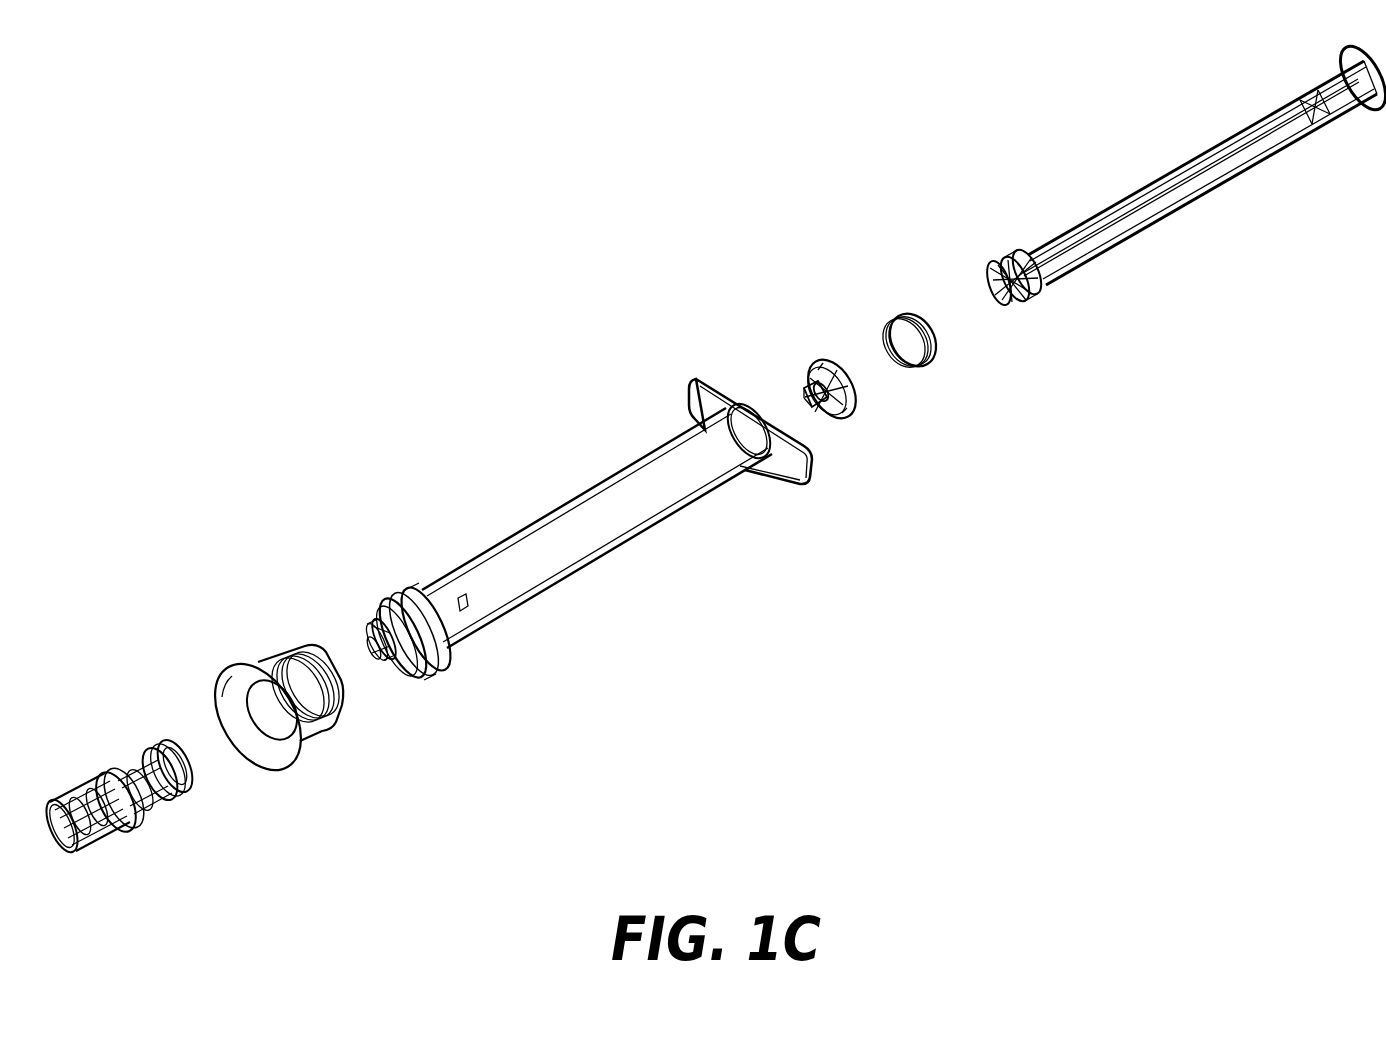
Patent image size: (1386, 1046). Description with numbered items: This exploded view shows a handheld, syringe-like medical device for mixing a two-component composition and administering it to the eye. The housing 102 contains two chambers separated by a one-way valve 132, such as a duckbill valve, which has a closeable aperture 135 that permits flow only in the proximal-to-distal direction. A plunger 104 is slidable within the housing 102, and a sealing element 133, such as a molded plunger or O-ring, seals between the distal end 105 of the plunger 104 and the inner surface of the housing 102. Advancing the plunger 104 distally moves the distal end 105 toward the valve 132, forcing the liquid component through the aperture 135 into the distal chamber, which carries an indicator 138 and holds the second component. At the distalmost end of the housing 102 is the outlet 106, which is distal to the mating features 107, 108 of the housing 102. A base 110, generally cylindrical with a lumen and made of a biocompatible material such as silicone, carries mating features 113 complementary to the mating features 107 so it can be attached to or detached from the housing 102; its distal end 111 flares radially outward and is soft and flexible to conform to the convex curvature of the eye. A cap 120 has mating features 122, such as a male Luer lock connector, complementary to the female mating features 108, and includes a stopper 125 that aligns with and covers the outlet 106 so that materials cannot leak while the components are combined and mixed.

The housing 102 is at (596, 560).
The plunger 104 is at (1196, 193).
The distal end of the plunger 105 is at (996, 266).
The outlet 106 is at (376, 654).
The mating features of the housing 107 is at (383, 592).
The mating features of the housing 108 is at (383, 633).
The base 110 is at (313, 737).
The distal end of the base 111 is at (222, 697).
The mating features of the base 113 is at (286, 662).
The cap 120 is at (104, 845).
The mating features of the cap 122 is at (182, 797).
The stopper 125 is at (140, 777).
The valve 132 is at (846, 415).
The sealing element 133 is at (926, 364).
The closeable aperture 135 is at (805, 390).
The indicator 138 is at (462, 597).